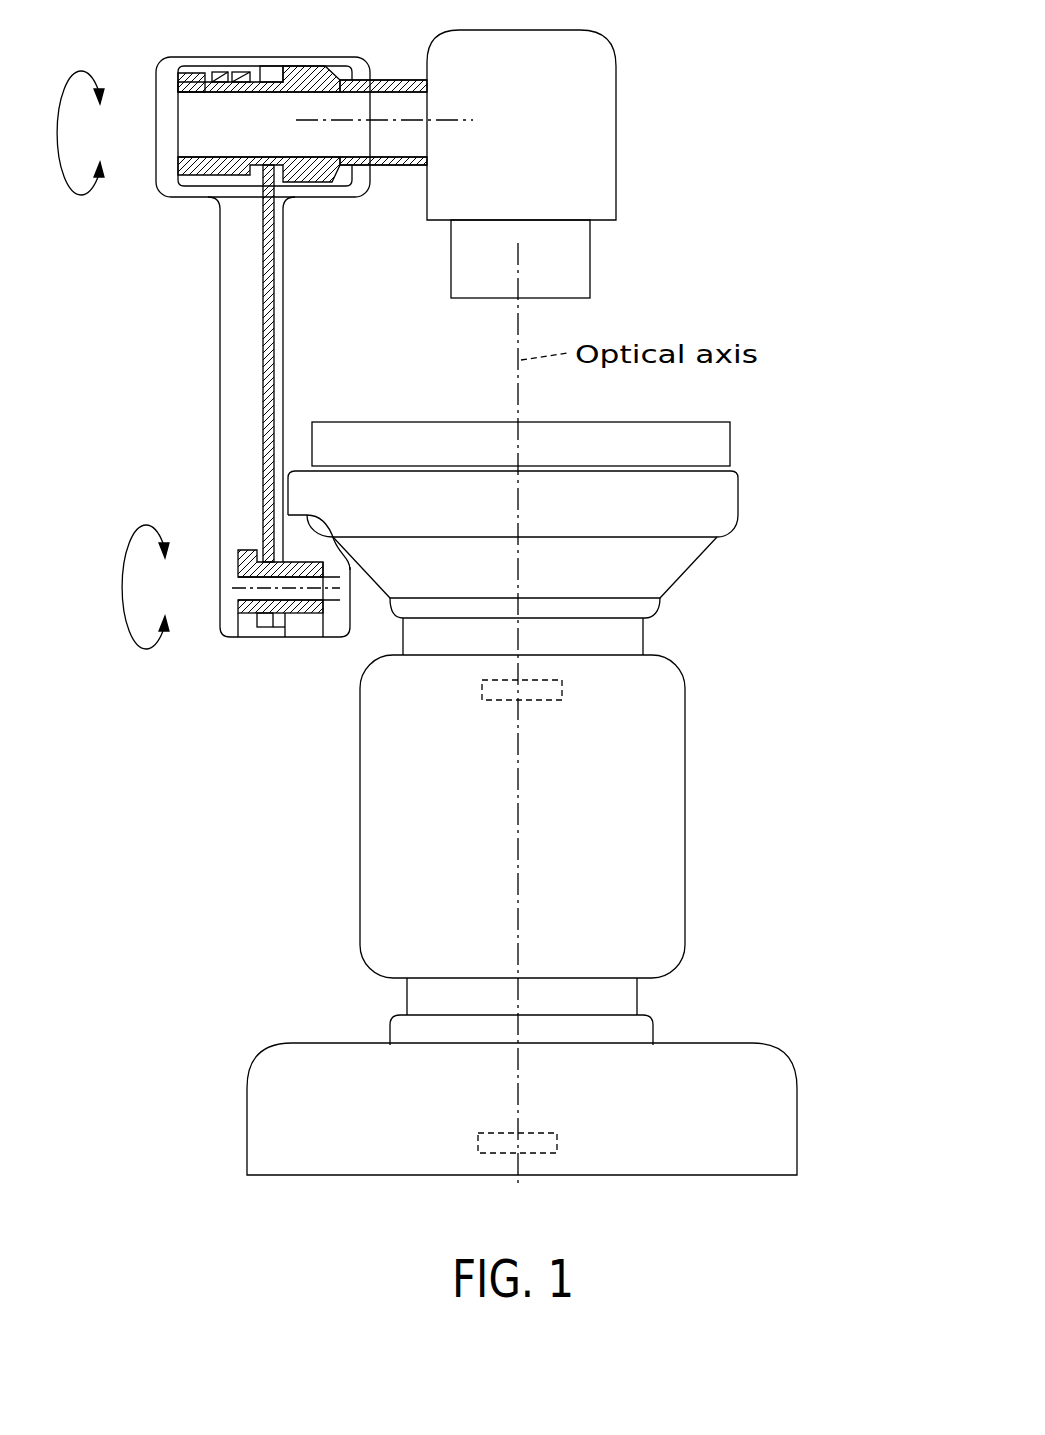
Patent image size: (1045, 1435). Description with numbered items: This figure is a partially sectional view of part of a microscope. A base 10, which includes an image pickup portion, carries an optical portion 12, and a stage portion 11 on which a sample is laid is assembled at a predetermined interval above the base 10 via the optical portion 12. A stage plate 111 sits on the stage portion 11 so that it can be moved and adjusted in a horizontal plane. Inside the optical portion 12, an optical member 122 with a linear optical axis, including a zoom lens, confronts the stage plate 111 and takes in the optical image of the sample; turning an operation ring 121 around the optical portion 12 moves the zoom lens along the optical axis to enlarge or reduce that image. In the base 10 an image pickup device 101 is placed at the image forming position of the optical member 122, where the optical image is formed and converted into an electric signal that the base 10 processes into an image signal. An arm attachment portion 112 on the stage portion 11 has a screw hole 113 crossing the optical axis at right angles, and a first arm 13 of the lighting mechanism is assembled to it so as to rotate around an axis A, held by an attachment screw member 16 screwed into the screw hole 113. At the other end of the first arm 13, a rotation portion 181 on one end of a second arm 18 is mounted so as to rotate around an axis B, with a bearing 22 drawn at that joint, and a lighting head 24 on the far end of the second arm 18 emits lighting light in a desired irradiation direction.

The base 10 is at (806, 1096).
The image pickup device 101 is at (558, 1141).
The stage portion 11 is at (748, 494).
The stage plate 111 is at (731, 437).
The arm attachment portion 112 is at (293, 630).
The screw hole 113 is at (340, 607).
The optical portion 12 is at (652, 637).
The operation ring 121 is at (686, 815).
The optical member 122 is at (562, 690).
The first arm 13 is at (262, 352).
The attachment screw member 16 is at (238, 556).
The second arm 18 is at (395, 80).
The rotation portion 181 is at (198, 170).
The bearing 22 is at (190, 73).
The lighting head 24 is at (622, 68).
The axis A is at (237, 600).
The axis B is at (313, 100).